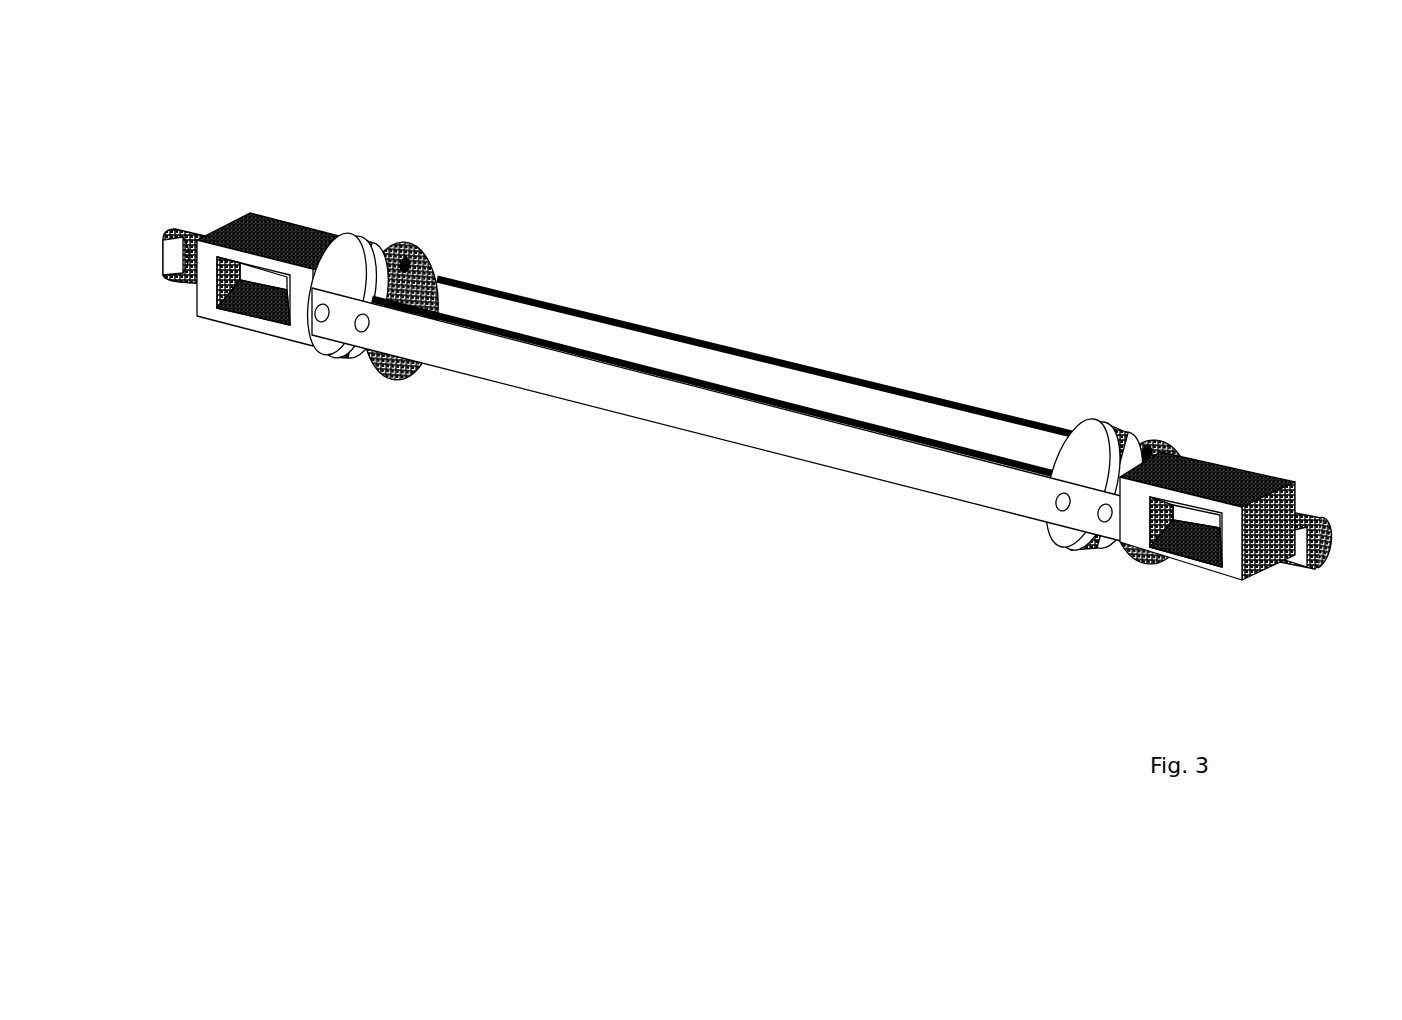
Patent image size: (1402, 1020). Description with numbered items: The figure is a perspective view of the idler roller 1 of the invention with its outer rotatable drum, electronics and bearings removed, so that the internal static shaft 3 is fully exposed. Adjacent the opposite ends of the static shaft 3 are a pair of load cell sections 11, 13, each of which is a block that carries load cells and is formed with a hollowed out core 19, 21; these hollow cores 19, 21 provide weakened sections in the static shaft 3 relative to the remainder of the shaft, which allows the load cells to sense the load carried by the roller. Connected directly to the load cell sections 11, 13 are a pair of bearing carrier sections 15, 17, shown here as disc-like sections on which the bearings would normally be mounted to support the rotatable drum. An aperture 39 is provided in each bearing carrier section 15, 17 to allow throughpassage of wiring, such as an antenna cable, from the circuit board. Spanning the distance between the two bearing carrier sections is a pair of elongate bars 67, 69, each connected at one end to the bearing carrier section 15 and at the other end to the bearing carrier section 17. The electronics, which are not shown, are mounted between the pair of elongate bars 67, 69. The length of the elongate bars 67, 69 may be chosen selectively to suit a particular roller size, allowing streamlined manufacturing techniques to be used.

The idler roller 1 is at (1200, 257).
The static shaft 3 is at (178, 238).
The load cell section 11 is at (274, 228).
The load cell section 13 is at (1230, 473).
The bearing carrier section 15 is at (428, 267).
The bearing carrier section 17 is at (1113, 440).
The hollowed out core 19 is at (252, 300).
The hollowed out core 21 is at (1187, 533).
The aperture 39 is at (405, 262).
The elongate bar 67 is at (687, 413).
The elongate bar 69 is at (763, 375).